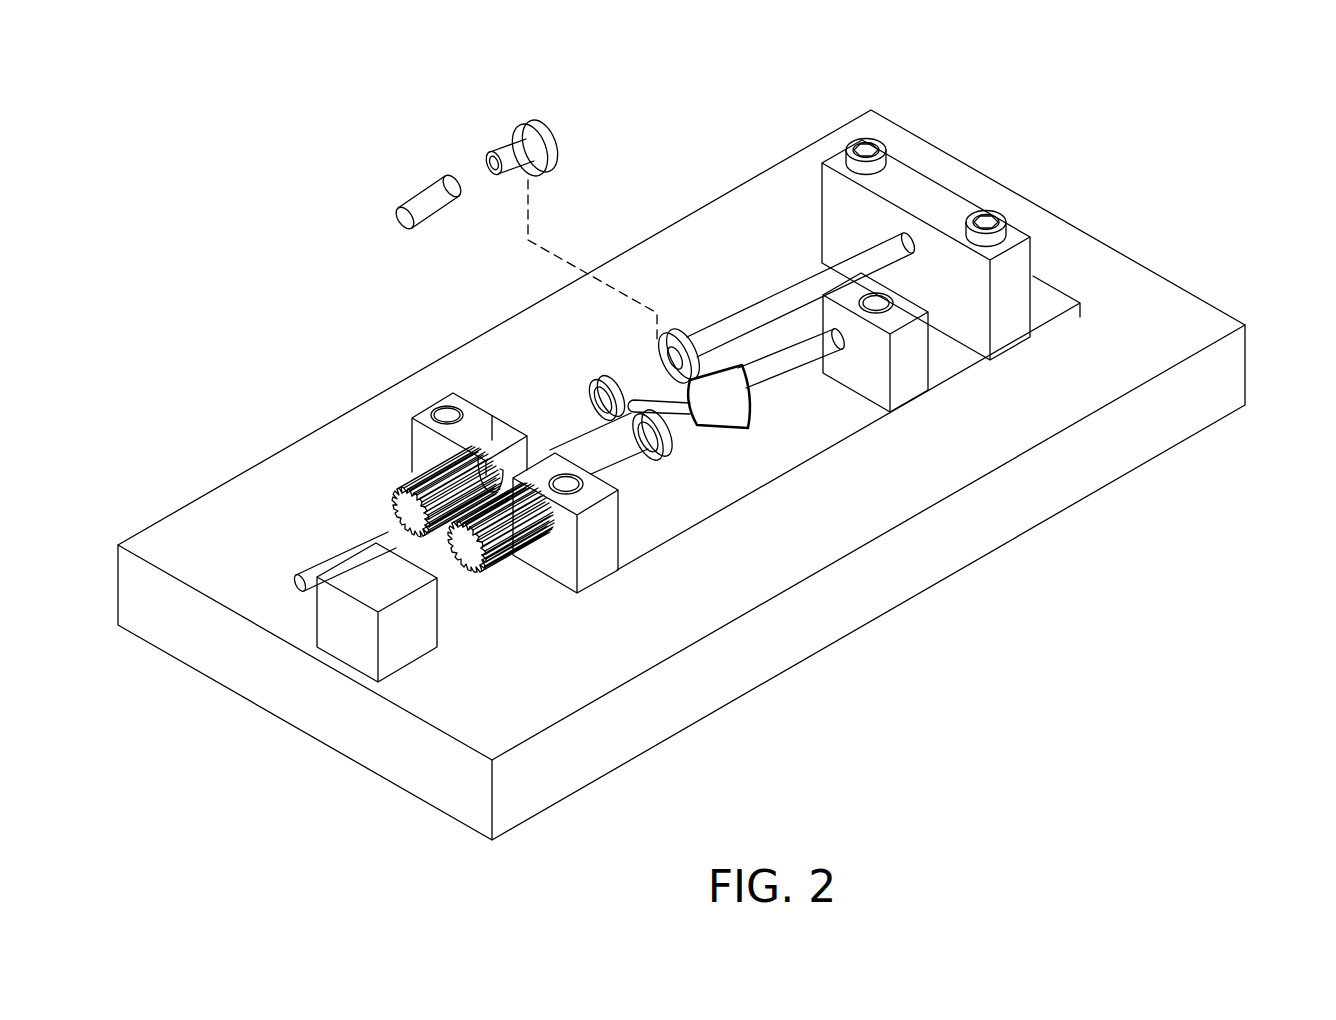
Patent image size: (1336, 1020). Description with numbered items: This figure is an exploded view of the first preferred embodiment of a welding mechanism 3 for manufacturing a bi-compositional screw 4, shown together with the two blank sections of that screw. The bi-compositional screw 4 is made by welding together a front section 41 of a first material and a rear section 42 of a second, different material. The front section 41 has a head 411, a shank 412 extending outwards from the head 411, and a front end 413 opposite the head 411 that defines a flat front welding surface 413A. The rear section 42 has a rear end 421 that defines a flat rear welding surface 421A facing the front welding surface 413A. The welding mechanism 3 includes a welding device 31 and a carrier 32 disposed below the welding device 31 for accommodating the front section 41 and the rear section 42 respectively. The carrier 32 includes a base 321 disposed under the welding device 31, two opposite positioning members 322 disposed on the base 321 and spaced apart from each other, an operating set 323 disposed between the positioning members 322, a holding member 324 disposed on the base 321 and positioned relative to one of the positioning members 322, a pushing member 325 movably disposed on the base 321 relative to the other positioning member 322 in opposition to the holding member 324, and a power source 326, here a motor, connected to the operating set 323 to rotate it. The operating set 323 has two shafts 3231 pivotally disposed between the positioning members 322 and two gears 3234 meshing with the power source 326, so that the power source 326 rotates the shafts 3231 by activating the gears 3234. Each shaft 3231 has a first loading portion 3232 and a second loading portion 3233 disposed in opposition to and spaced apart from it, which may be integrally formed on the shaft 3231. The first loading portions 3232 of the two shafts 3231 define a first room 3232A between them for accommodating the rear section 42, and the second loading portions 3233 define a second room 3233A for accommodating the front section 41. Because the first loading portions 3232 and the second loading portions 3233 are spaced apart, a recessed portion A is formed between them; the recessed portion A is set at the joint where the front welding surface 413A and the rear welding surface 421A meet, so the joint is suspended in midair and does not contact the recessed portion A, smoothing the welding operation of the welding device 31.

The welding mechanism 3 is at (262, 243).
The welding device 31 is at (696, 469).
The carrier 32 is at (1177, 426).
The base 321 is at (1163, 313).
The positioning members 322 is at (588, 566).
The operating set 323 is at (692, 445).
The shafts 3231 is at (810, 355).
The first loading portion 3232 is at (623, 478).
The first room 3232A is at (580, 437).
The second loading portion 3233 is at (735, 408).
The second room 3233A is at (647, 397).
The gears 3234 is at (427, 480).
The holding member 324 is at (887, 243).
The pushing member 325 is at (330, 570).
The power source 326 is at (353, 643).
The recessed portion A is at (593, 392).
The bi-compositional screw 4 is at (594, 165).
The front section 41 is at (566, 119).
The head 411 is at (522, 120).
The shank 412 is at (507, 143).
The front end 413 is at (503, 187).
The front welding surface 413A is at (483, 170).
The rear section 42 is at (375, 228).
The rear end 421 is at (447, 183).
The rear welding surface 421A is at (470, 182).